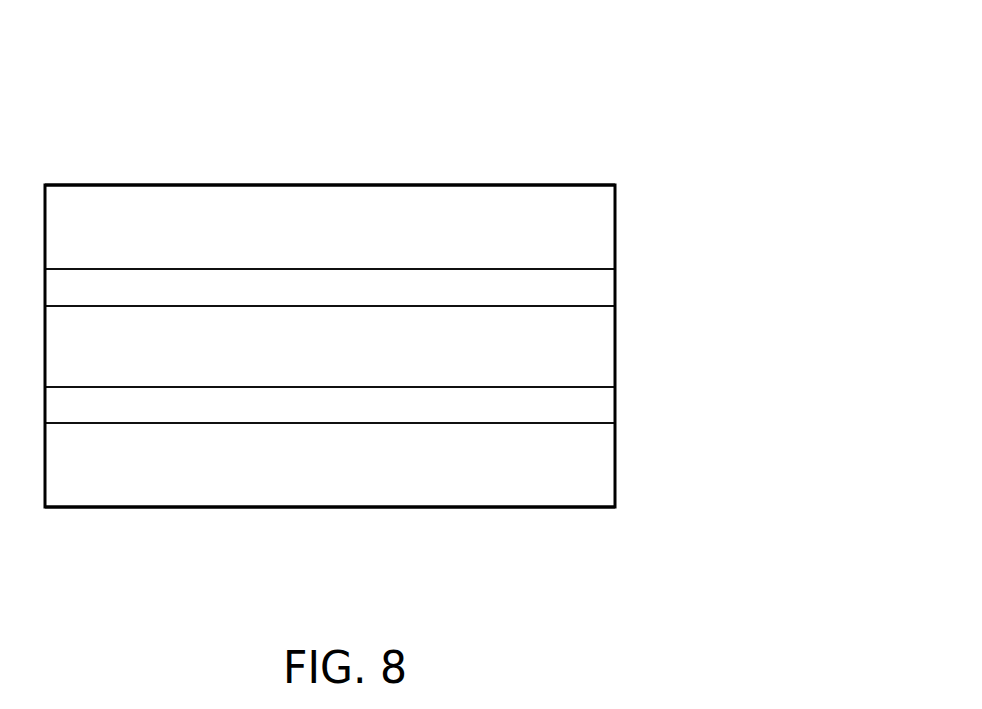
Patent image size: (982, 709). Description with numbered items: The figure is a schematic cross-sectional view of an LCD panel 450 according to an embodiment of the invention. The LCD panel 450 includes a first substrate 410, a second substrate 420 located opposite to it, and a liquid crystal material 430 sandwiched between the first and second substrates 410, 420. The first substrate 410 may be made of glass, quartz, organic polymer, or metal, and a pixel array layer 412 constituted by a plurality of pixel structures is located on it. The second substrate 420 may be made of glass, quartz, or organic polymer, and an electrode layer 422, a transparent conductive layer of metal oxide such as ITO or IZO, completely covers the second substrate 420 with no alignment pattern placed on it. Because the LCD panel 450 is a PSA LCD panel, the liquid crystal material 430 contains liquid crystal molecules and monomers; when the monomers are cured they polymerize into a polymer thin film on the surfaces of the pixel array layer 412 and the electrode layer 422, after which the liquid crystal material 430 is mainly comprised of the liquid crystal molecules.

The LCD panel 450 is at (611, 137).
The second substrate 420 is at (598, 237).
The electrode layer 422 is at (600, 288).
The liquid crystal material 430 is at (600, 355).
The pixel array layer 412 is at (600, 407).
The first substrate 410 is at (600, 473).